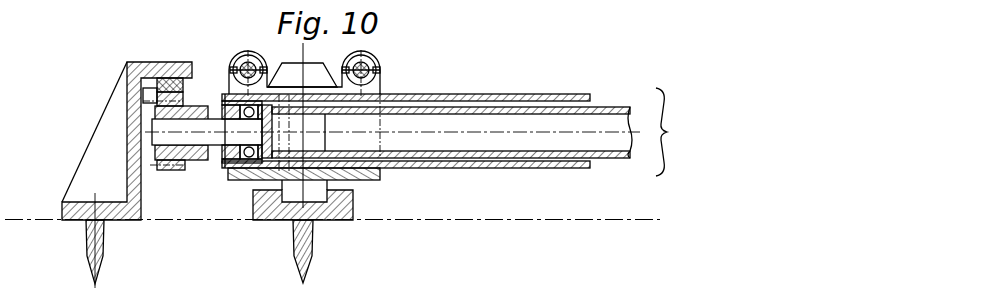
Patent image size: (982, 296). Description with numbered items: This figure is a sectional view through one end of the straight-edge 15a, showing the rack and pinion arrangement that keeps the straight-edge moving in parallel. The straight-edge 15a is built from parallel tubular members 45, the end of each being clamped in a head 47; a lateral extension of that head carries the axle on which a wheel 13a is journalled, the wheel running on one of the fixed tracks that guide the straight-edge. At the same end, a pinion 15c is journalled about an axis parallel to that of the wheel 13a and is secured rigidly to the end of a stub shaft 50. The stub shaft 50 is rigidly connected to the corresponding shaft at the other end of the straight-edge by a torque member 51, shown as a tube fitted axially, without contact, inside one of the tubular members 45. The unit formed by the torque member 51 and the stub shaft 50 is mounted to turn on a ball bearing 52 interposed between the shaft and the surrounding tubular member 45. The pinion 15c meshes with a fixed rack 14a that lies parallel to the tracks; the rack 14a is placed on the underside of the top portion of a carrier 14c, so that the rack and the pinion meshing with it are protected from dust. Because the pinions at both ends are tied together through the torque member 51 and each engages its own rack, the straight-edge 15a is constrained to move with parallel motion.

The carrier 14c is at (78, 168).
The fixed rack 14a is at (157, 90).
The pinion 15c is at (174, 183).
The stub shaft 50 is at (215, 117).
The ball bearing 52 is at (251, 171).
The wheel 13a is at (308, 63).
The tubular member 45 is at (493, 94).
The torque member 51 is at (612, 108).
The head 47 is at (380, 178).
The straight-edge 15a is at (680, 132).